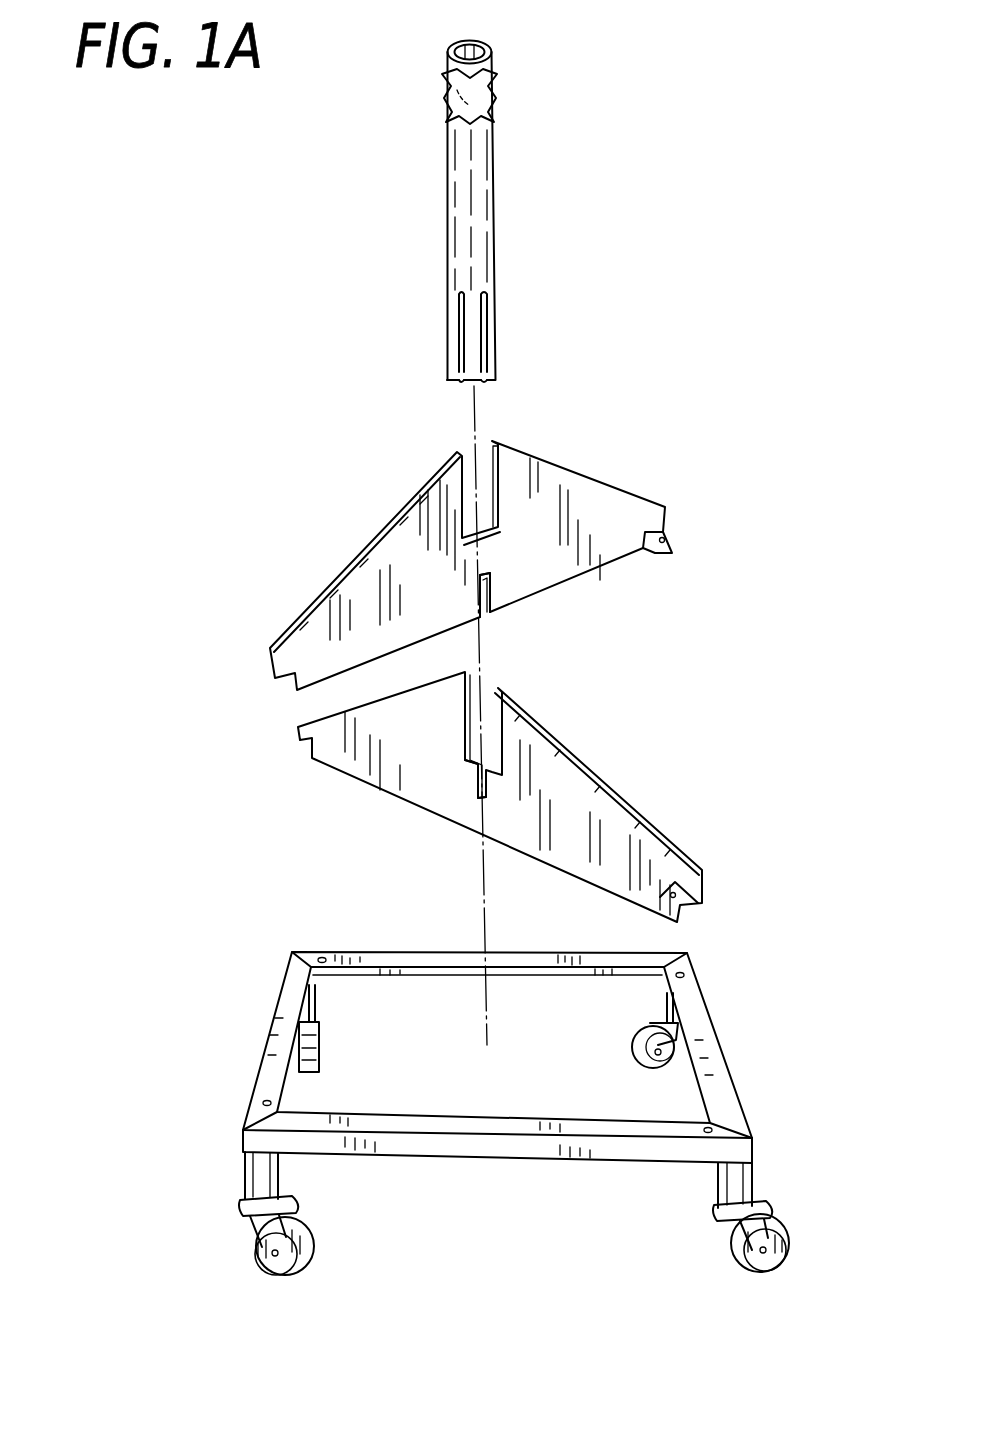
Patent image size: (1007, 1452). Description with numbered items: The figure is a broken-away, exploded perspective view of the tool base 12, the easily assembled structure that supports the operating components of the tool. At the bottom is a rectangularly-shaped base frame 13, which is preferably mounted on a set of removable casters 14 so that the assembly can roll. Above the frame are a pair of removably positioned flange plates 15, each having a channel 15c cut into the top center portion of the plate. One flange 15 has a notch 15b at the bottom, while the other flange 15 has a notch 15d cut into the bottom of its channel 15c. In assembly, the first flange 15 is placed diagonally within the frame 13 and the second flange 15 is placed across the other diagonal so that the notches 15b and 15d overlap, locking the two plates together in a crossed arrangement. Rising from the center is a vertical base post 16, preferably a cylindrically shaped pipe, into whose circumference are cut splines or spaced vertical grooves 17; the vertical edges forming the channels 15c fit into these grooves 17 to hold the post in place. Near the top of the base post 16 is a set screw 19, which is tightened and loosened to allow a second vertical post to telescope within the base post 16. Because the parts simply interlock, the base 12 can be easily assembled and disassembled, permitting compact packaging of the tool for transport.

The tool base 12 is at (492, 1113).
The base frame 13 is at (725, 1105).
The removable casters 14 is at (788, 1248).
The flange plates 15 is at (597, 497).
The notch 15b is at (487, 617).
The channels 15c is at (458, 457).
The notch 15d is at (480, 796).
The vertical base post 16 is at (517, 210).
The splines or spaced vertical grooves 17 is at (480, 380).
The set screw 19 is at (485, 102).